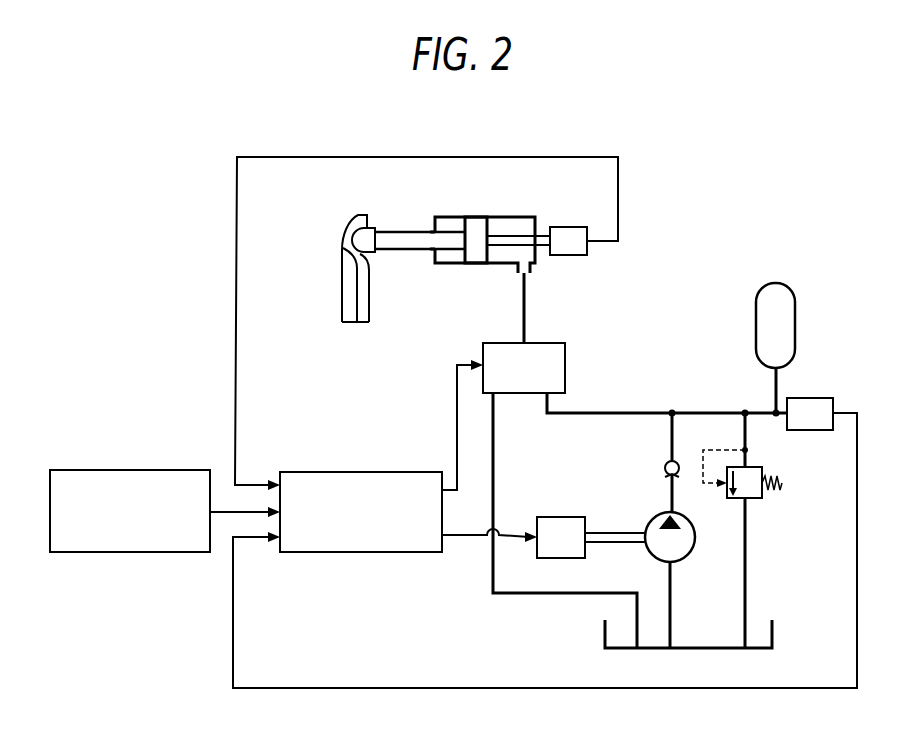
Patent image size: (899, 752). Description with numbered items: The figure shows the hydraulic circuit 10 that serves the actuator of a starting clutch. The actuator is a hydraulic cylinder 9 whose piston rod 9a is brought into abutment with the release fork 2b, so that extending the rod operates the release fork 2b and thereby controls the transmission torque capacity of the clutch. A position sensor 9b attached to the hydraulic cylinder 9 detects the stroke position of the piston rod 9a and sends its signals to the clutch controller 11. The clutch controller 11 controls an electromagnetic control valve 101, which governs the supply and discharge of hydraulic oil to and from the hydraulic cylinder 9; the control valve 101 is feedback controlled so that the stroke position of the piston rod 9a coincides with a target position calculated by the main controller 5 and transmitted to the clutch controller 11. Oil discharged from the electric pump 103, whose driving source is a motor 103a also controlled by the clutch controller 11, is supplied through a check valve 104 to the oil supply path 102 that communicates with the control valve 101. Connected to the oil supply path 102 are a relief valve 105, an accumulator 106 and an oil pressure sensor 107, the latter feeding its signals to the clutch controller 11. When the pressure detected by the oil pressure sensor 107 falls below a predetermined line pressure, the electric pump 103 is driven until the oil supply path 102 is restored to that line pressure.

The release fork 2b is at (345, 277).
The main controller 5 is at (122, 470).
The hydraulic cylinder 9 is at (474, 277).
The piston rod 9a is at (410, 233).
The position sensor 9b is at (567, 228).
The hydraulic circuit 10 is at (722, 249).
The clutch controller 11 is at (357, 472).
The electromagnetic control valve 101 is at (565, 362).
The oil supply path 102 is at (640, 413).
The electric pump 103 is at (648, 521).
The motor 103a is at (562, 517).
The check valve 104 is at (665, 464).
The relief valve 105 is at (762, 498).
The accumulator 106 is at (778, 285).
The oil pressure sensor 107 is at (812, 398).